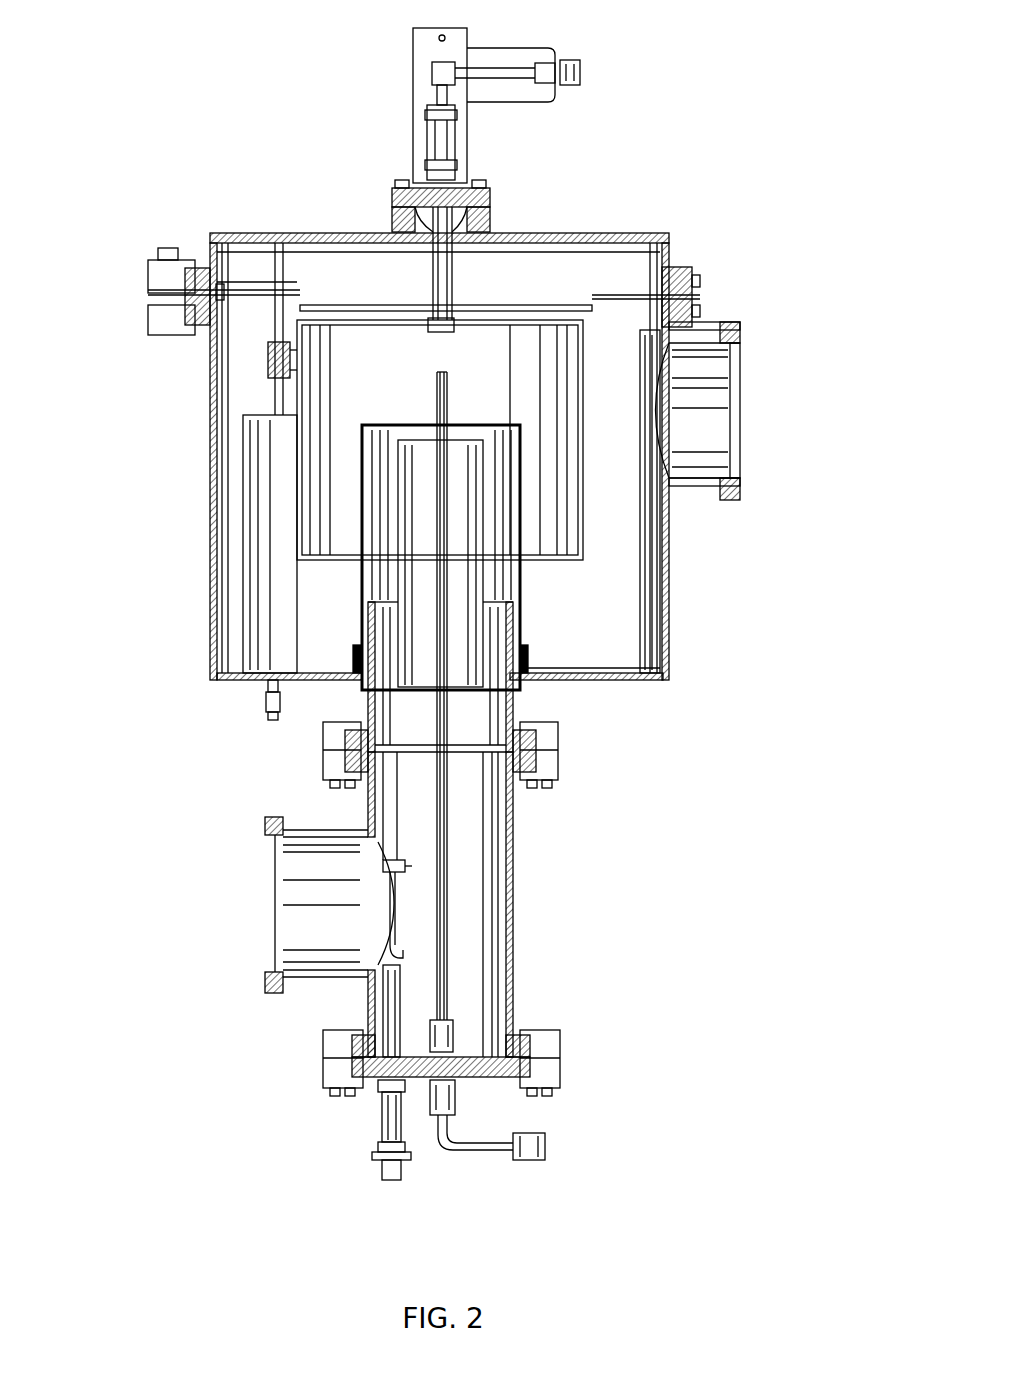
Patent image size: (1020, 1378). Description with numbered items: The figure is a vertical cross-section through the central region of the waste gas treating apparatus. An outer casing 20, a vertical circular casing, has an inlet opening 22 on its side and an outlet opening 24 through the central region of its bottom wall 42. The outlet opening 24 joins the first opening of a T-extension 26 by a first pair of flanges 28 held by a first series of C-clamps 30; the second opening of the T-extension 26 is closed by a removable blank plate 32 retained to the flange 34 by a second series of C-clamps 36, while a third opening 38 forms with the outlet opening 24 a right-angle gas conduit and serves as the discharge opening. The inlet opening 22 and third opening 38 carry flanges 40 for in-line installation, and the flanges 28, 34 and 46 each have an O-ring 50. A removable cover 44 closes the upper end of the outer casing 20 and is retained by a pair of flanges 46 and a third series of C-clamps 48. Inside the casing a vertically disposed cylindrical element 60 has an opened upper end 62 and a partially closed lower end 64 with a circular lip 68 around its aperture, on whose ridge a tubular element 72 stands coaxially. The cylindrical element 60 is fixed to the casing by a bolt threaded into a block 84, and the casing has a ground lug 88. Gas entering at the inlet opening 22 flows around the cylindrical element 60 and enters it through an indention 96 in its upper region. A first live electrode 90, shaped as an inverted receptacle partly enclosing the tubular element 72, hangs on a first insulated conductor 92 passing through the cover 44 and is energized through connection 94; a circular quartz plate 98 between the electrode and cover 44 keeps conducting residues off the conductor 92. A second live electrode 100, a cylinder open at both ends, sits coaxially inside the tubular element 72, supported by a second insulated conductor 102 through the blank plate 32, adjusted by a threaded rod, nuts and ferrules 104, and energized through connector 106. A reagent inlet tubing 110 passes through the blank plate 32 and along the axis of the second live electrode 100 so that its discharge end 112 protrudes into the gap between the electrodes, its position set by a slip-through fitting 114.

The outer casing 20 is at (669, 611).
The inlet opening 22 is at (760, 399).
The outlet opening 24 is at (515, 702).
The T-extension 26 is at (513, 905).
The first pair of flanges 28 is at (522, 780).
The first series of C-clamps 30 is at (558, 768).
The removable blank plate 32 is at (490, 1080).
The flange 34 is at (530, 1035).
The second series of C-clamps 36 is at (560, 1045).
The third opening 38 is at (230, 960).
The flanges 40 is at (735, 500).
The bottom wall 42 is at (222, 680).
The removable cover 44 is at (267, 233).
The pair of flanges 46 is at (700, 272).
The third series of C-clamps 48 is at (148, 286).
The O-ring 50 is at (700, 292).
The cylindrical element 60 is at (243, 452).
The opened upper end 62 is at (365, 262).
The partially closed lower end 64 is at (587, 667).
The circular lip 68 is at (528, 655).
The tubular element 72 is at (362, 520).
The block 84 is at (268, 362).
The ground lug 88 is at (270, 715).
The first live electrode 90 is at (297, 482).
The first insulated conductor 92 is at (452, 288).
The connection 94 is at (565, 68).
The indention 96 is at (297, 270).
The circular quartz plate 98 is at (582, 305).
The second live electrode 100 is at (398, 572).
The second insulated conductor 102 is at (385, 1000).
The threaded rod, nuts and ferrules 104 is at (385, 918).
The connector 106 is at (378, 1175).
The reagent inlet tubing 110 is at (448, 932).
The discharge end 112 is at (437, 392).
The slip-through fitting 114 is at (453, 1102).